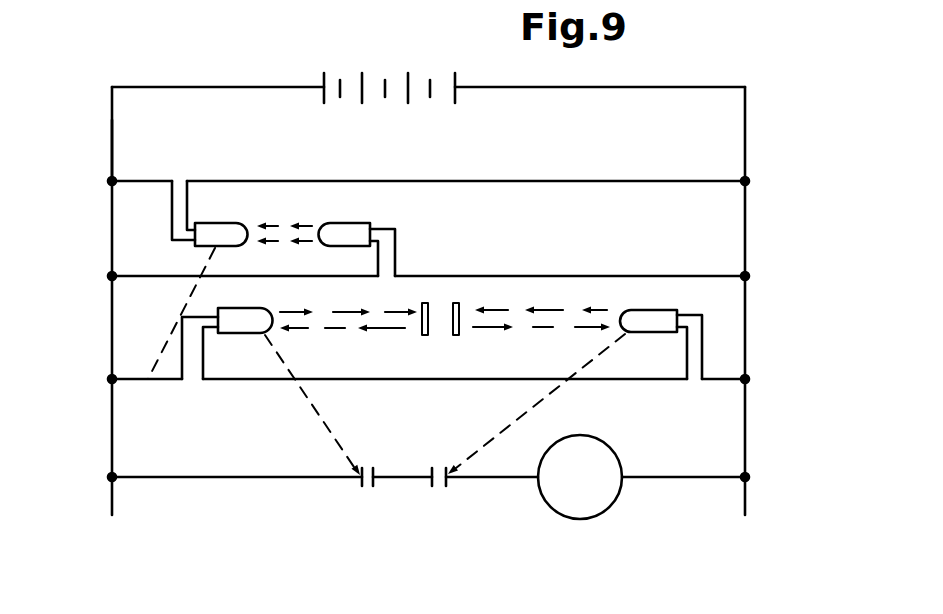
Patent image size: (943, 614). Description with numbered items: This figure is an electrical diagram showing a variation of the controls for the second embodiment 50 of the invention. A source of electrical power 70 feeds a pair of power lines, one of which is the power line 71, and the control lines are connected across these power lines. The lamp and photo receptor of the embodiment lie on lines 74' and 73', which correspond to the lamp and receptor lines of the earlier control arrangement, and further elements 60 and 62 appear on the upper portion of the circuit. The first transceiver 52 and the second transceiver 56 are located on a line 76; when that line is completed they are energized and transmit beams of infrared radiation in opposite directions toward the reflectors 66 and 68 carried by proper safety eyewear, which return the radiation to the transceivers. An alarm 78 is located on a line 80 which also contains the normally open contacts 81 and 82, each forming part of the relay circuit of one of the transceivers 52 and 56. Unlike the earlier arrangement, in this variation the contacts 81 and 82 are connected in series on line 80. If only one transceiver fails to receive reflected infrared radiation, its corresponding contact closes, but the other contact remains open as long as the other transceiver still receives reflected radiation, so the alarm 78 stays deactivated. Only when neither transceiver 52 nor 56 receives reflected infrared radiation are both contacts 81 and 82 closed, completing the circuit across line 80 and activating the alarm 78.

The second embodiment 50 is at (158, 73).
The first transceiver 52 is at (236, 322).
The second transceiver 56 is at (650, 310).
The light source 60 is at (226, 229).
The photodetector 62 is at (357, 229).
The reflector 66 is at (421, 333).
The reflector 68 is at (460, 333).
The source of electrical power 70 is at (322, 82).
The power line 71 is at (112, 150).
The conductor 73' is at (428, 156).
The conductor 74' is at (428, 249).
The line 76 is at (478, 380).
The alarm 78 is at (575, 505).
The line 80 is at (492, 479).
The normally open contact 81 is at (430, 482).
The normally open contact 82 is at (358, 482).